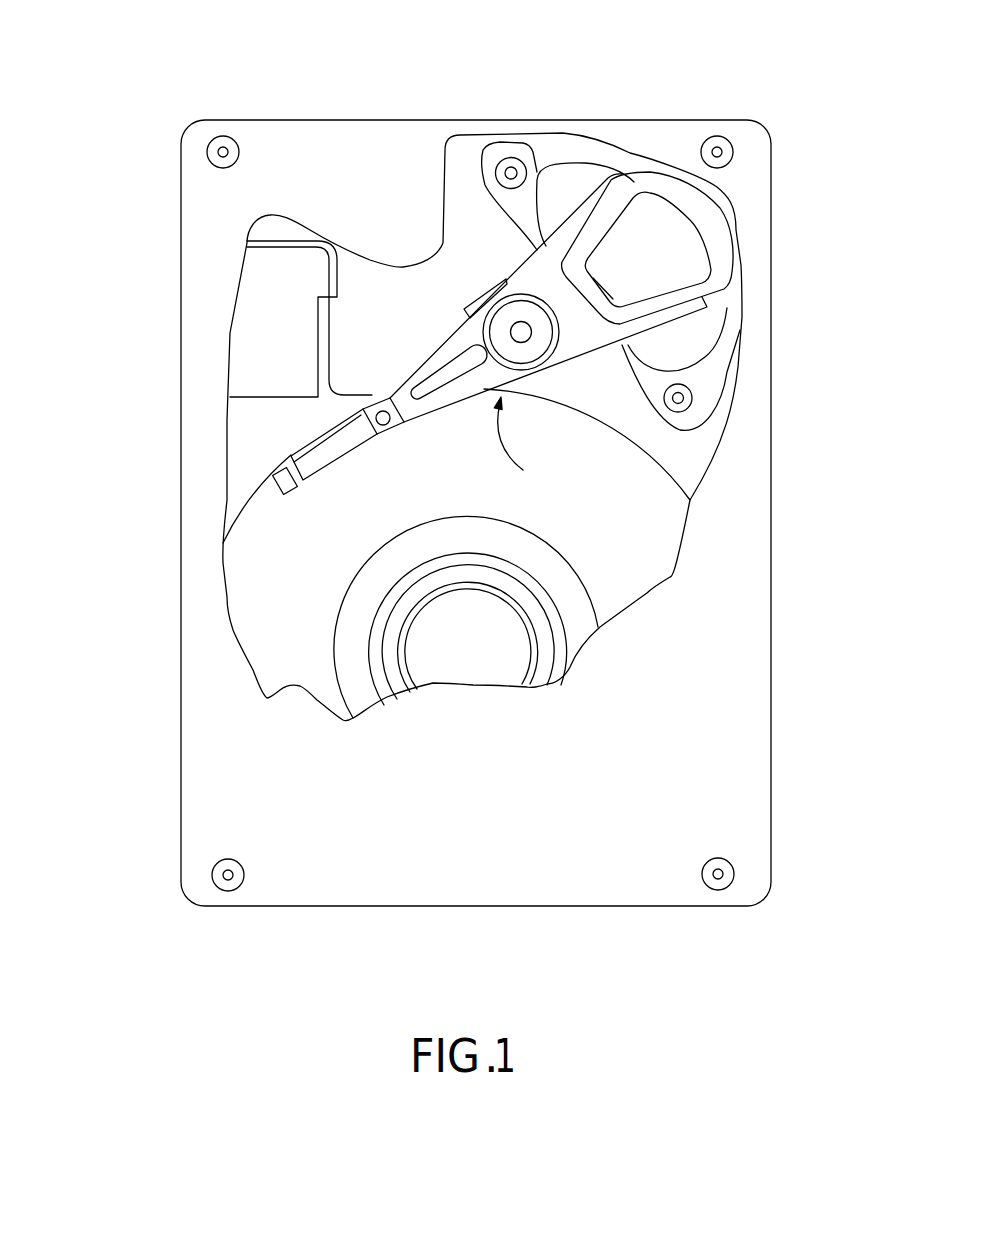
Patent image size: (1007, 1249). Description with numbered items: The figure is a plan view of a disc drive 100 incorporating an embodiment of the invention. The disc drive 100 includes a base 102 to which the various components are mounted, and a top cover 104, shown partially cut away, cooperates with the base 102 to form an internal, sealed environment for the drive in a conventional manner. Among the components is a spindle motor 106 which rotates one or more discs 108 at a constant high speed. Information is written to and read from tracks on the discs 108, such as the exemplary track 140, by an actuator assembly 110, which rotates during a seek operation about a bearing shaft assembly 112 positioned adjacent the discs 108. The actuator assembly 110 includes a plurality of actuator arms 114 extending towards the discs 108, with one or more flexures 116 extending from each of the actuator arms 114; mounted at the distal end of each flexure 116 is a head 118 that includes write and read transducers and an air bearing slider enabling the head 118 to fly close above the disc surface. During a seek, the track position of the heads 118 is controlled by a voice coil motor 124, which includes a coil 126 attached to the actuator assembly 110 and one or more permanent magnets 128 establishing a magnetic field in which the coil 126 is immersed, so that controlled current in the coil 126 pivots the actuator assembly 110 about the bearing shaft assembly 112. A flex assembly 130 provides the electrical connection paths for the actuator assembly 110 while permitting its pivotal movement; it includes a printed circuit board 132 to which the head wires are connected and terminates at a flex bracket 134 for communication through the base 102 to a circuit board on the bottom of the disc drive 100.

The disc drive 100 is at (198, 68).
The base 102 is at (245, 434).
The top cover 104 is at (242, 770).
The spindle motor 106 is at (467, 653).
The disc 108 is at (623, 577).
The actuator assembly 110 is at (530, 451).
The bearing shaft assembly 112 is at (523, 333).
The actuator arm 114 is at (457, 407).
The flexure 116 is at (313, 463).
The head 118 is at (277, 490).
The voice coil motor 124 is at (587, 180).
The coil 126 is at (718, 252).
The permanent magnet 128 is at (549, 202).
The flex assembly 130 is at (433, 347).
The printed circuit board 132 is at (488, 293).
The flex bracket 134 is at (265, 308).
The track 140 is at (548, 546).